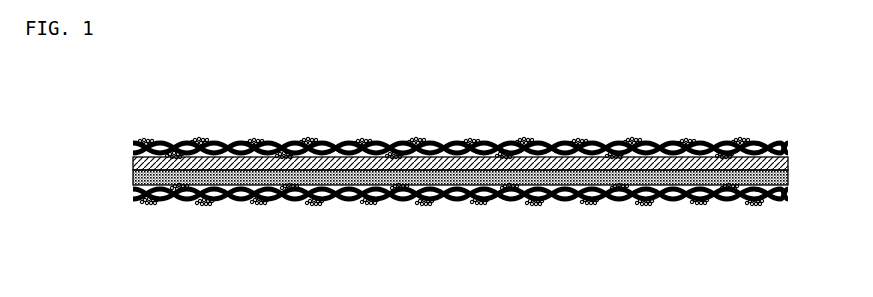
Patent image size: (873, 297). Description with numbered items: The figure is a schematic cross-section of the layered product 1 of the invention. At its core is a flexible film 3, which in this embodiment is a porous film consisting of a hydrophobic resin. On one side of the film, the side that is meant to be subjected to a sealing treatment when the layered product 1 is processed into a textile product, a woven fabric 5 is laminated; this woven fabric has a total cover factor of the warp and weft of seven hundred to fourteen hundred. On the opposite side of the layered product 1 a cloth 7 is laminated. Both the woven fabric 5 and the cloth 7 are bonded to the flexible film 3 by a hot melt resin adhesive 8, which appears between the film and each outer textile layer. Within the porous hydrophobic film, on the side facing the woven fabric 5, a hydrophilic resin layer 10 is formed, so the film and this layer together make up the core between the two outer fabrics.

The layered product 1 is at (467, 130).
The flexible film 3 is at (817, 157).
The woven fabric 5 is at (644, 198).
The cloth 7 is at (668, 142).
The hot melt resin adhesive 8 is at (370, 142).
The hydrophilic resin layer 10 is at (133, 180).